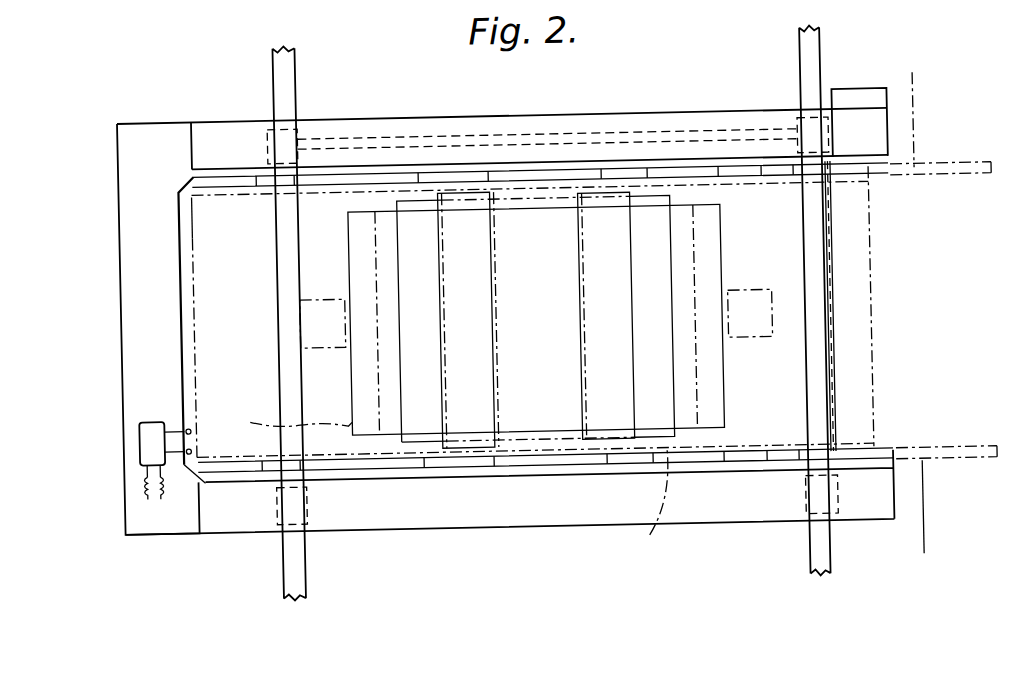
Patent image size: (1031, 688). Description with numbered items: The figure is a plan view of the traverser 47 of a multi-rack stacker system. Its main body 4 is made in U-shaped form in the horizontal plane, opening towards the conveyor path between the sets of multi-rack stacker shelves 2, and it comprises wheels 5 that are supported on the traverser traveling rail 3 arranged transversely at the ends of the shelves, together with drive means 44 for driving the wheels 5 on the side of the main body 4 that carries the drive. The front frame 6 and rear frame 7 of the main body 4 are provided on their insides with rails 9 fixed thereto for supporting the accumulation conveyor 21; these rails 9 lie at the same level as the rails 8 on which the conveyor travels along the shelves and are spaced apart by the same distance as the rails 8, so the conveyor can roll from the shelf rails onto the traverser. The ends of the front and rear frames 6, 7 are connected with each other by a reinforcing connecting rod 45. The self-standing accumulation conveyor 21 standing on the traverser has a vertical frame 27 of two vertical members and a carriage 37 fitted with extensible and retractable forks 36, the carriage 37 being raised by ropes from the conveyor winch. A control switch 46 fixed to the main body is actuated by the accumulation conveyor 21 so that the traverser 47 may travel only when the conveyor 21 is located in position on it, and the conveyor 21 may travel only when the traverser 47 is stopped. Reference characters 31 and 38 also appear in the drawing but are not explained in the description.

The multi-rack stacker shelves 2 is at (920, 153).
The traverser traveling rail 3 is at (802, 54).
The main body 4 is at (234, 102).
The wheels 5 is at (300, 134).
The front frame 6 is at (630, 124).
The rear frame 7 is at (402, 526).
The rails 8 is at (969, 193).
The rails 9 is at (552, 190).
The accumulation conveyor 21 is at (872, 344).
The vertical frame 27 is at (314, 319).
The carriage frame 31 is at (280, 368).
The forks 36 is at (588, 332).
The carriage 37 is at (282, 420).
The control line 38 is at (644, 509).
The drive means 44 is at (848, 113).
The reinforcing connecting rod 45 is at (818, 237).
The control switch 46 is at (146, 426).
The traverser 47 is at (146, 150).